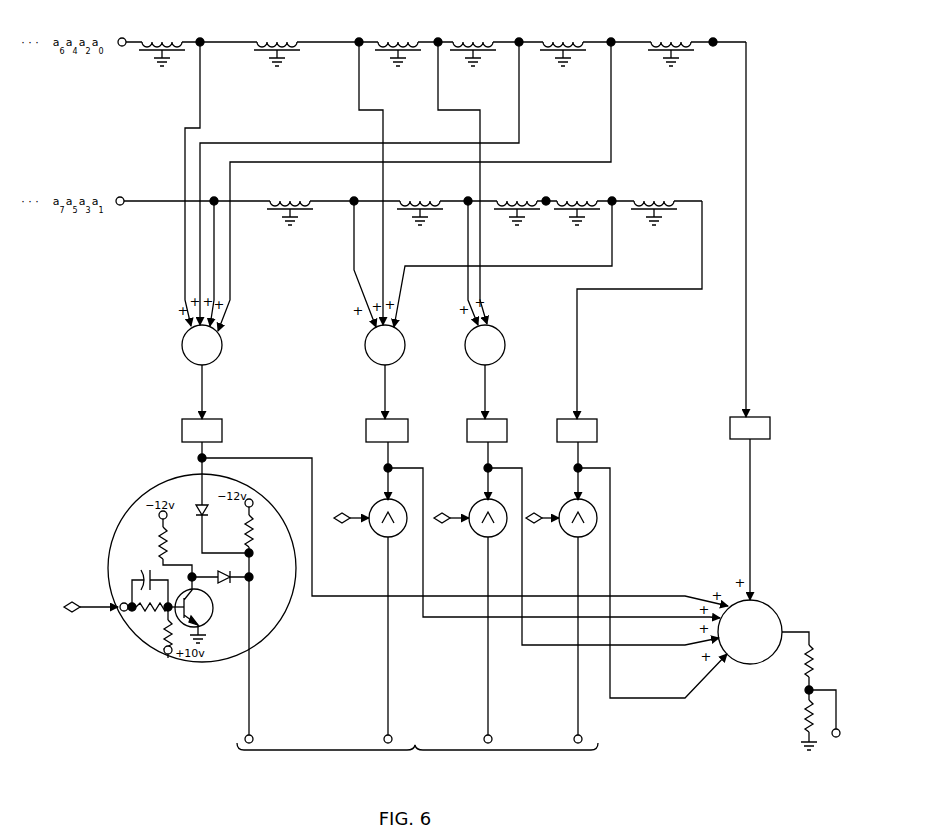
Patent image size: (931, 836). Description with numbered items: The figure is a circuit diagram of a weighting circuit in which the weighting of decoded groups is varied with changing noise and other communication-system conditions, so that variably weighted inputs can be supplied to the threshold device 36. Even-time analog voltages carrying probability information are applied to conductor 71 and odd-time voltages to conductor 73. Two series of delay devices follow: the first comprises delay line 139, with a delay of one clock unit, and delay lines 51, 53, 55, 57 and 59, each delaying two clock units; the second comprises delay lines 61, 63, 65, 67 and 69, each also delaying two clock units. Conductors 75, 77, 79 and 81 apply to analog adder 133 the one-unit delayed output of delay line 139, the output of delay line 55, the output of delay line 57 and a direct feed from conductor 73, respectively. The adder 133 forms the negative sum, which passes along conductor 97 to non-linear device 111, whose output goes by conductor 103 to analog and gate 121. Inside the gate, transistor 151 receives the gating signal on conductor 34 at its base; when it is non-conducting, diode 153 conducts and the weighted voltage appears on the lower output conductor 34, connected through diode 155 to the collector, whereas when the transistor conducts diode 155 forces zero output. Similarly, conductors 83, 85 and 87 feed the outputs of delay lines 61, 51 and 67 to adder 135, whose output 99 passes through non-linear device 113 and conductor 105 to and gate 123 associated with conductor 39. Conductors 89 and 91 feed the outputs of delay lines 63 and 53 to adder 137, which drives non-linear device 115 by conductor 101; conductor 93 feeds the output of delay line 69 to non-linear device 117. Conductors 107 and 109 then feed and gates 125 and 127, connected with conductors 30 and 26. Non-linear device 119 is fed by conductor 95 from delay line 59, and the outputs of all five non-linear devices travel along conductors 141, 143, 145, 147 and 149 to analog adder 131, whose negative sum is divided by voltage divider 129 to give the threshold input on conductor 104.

The conductor 71 is at (127, 39).
The delay line 139 is at (162, 40).
The delay line 51 is at (277, 40).
The delay line 53 is at (398, 40).
The delay line 55 is at (473, 40).
The delay line 57 is at (563, 40).
The delay line 59 is at (671, 40).
The conductor 95 is at (744, 130).
The conductor 73 is at (142, 199).
The delay line 61 is at (290, 199).
The delay line 63 is at (420, 199).
The delay line 65 is at (517, 199).
The delay line 67 is at (577, 199).
The delay line 69 is at (654, 199).
The conductor 75 is at (185, 262).
The conductor 77 is at (199, 283).
The conductor 81 is at (215, 280).
The conductor 79 is at (225, 298).
The conductor 83 is at (353, 278).
The conductor 85 is at (384, 267).
The conductor 87 is at (402, 280).
The conductor 89 is at (470, 288).
The conductor 91 is at (487, 288).
The analog adder 133 is at (222, 348).
The adder 135 is at (405, 348).
The adder 137 is at (503, 345).
The conductor 97 is at (203, 382).
The output 99 is at (386, 382).
The conductor 101 is at (486, 380).
The conductor 93 is at (577, 380).
The non-linear device 111 is at (222, 431).
The non-linear device 113 is at (408, 430).
The non-linear device 115 is at (507, 430).
The non-linear device 117 is at (597, 430).
The non-linear device 119 is at (770, 426).
The conductor 103 is at (197, 457).
The conductor 105 is at (389, 448).
The conductor 107 is at (490, 449).
The conductor 109 is at (580, 448).
The conductor 149 is at (751, 486).
The analog and gate 121 is at (136, 504).
The diode 153 is at (201, 507).
The diode 155 is at (223, 586).
The transistor 151 is at (212, 620).
The conductor 34 is at (92, 613).
The conductor 39 is at (358, 515).
The conductor 30 is at (460, 515).
The conductor 26 is at (553, 515).
The and gate 123 is at (380, 540).
The and gate 125 is at (480, 540).
The and gate 127 is at (570, 540).
The analog adder 131 is at (775, 608).
The conductor 141 is at (688, 594).
The conductor 143 is at (670, 617).
The conductor 145 is at (687, 645).
The conductor 147 is at (683, 697).
The voltage divider 129 is at (807, 677).
The conductor 104 is at (836, 698).
The threshold device 36 is at (417, 758).